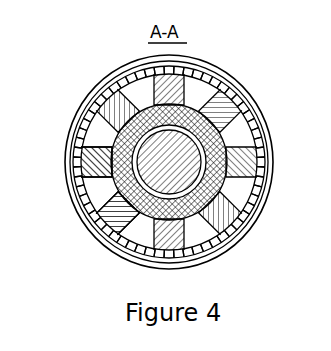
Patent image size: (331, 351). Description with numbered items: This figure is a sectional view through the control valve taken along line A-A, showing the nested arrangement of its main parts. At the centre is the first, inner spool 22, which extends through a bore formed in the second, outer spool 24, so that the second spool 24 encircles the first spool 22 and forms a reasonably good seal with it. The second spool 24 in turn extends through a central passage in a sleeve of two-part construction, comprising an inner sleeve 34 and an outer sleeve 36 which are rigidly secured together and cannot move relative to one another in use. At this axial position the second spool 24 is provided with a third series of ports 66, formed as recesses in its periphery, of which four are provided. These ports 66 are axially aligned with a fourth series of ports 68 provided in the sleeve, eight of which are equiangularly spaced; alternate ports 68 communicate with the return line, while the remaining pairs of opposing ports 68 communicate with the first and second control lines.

The first, inner spool 22 is at (98, 192).
The second, outer spool 24 is at (237, 221).
The inner sleeve 34 is at (235, 129).
The outer sleeve 36 is at (254, 108).
The third series of ports 66 is at (130, 245).
The fourth series of ports 68 is at (198, 78).